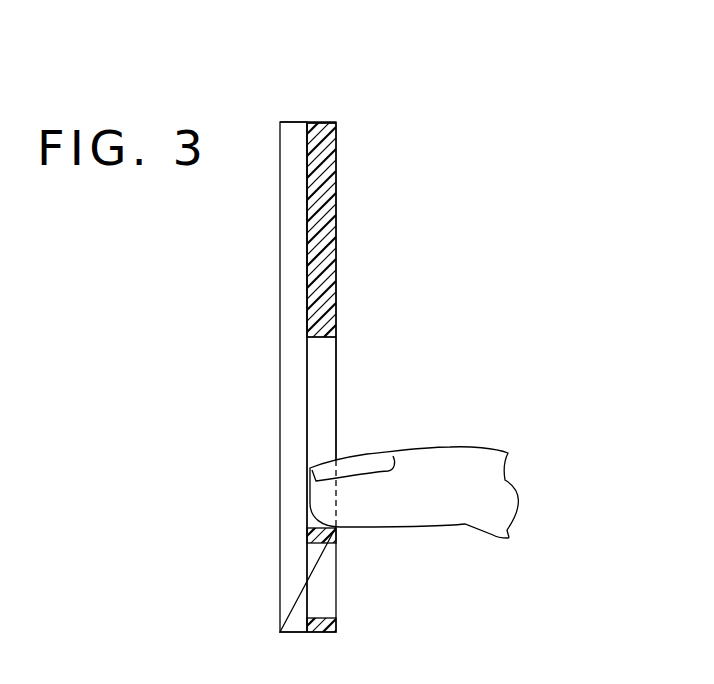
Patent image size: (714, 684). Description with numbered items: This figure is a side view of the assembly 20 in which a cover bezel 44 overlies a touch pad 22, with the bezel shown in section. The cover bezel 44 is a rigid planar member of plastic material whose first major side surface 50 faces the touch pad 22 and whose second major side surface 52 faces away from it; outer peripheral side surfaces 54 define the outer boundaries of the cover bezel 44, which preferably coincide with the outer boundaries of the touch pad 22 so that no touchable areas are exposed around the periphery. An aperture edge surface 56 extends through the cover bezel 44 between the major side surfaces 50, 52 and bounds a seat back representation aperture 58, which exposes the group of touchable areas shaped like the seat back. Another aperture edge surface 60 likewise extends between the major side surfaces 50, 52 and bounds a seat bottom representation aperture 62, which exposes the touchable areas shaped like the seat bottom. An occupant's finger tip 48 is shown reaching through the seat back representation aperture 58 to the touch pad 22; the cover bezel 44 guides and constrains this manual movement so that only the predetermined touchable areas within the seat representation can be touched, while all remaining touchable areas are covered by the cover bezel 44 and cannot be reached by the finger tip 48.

The fingerprint sensing device 20 is at (330, 78).
The touch pad 22 is at (292, 116).
The cover bezel 44 is at (343, 160).
The finger tip 48 is at (452, 455).
The first major side surface 50 is at (308, 265).
The second major side surface 52 is at (336, 236).
The outer peripheral side surfaces 54 is at (318, 121).
The aperture edge surface 56 is at (337, 348).
The seat back representation aperture 58 is at (342, 396).
The aperture edge surface 60 is at (313, 543).
The seat bottom representation aperture 62 is at (340, 600).